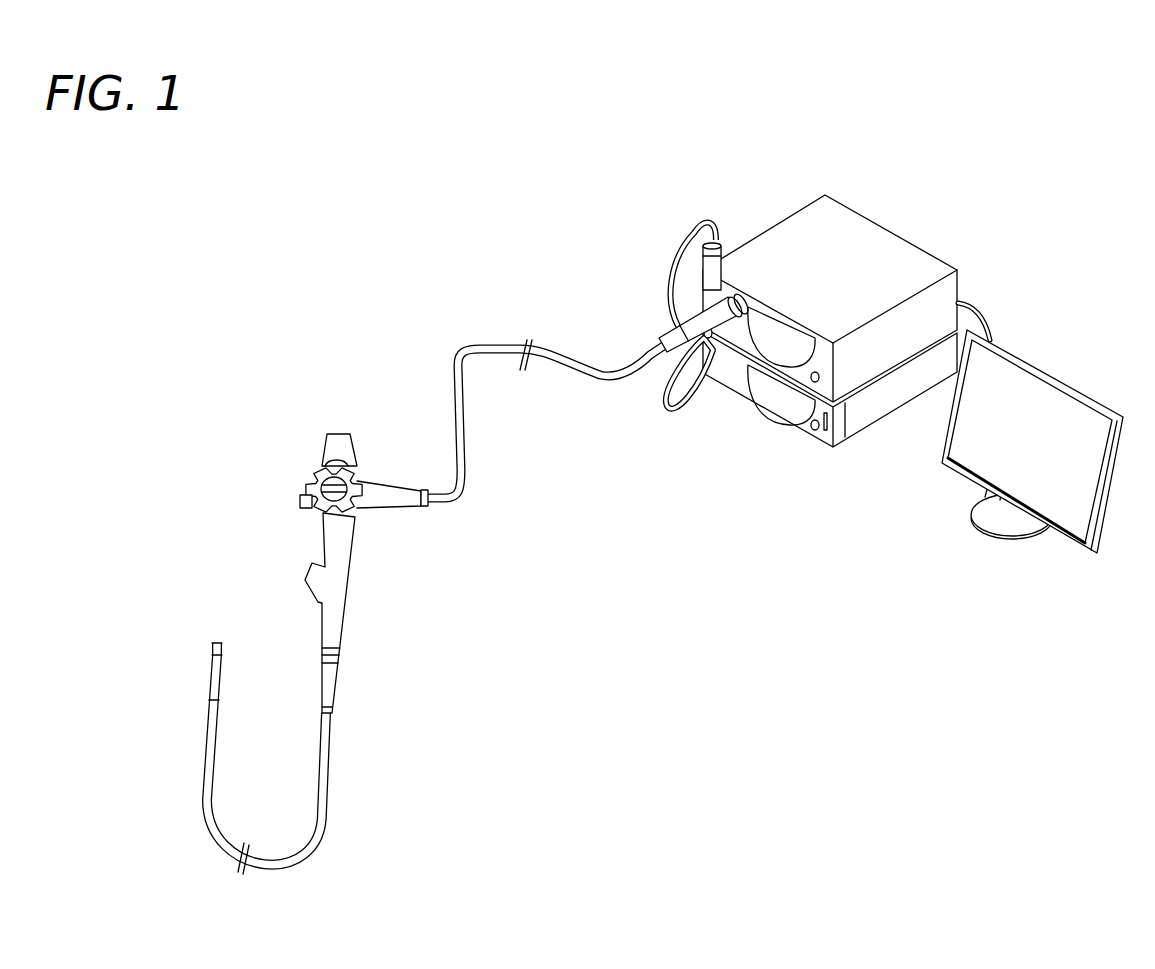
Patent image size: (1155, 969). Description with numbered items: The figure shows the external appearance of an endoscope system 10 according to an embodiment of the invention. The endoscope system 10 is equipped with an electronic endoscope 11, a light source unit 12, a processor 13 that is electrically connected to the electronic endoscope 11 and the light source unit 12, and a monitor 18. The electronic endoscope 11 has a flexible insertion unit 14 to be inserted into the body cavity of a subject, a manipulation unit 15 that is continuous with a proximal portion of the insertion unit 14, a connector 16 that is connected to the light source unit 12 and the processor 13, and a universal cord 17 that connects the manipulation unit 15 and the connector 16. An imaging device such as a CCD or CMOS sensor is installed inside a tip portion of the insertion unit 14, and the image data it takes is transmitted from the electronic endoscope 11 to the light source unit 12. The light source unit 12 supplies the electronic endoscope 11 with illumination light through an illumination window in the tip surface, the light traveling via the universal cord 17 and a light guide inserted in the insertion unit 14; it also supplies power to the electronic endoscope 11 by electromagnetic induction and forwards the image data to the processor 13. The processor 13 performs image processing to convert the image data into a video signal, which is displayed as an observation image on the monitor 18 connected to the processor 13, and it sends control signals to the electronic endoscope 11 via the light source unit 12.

The endoscope system 10 is at (691, 727).
The electronic endoscope 11 is at (381, 696).
The light source unit 12 is at (882, 225).
The processor 13 is at (805, 425).
The insertion unit 14 is at (342, 785).
The manipulation unit 15 is at (362, 591).
The connector 16 is at (663, 340).
The universal cord 17 is at (460, 433).
The monitor 18 is at (1040, 365).